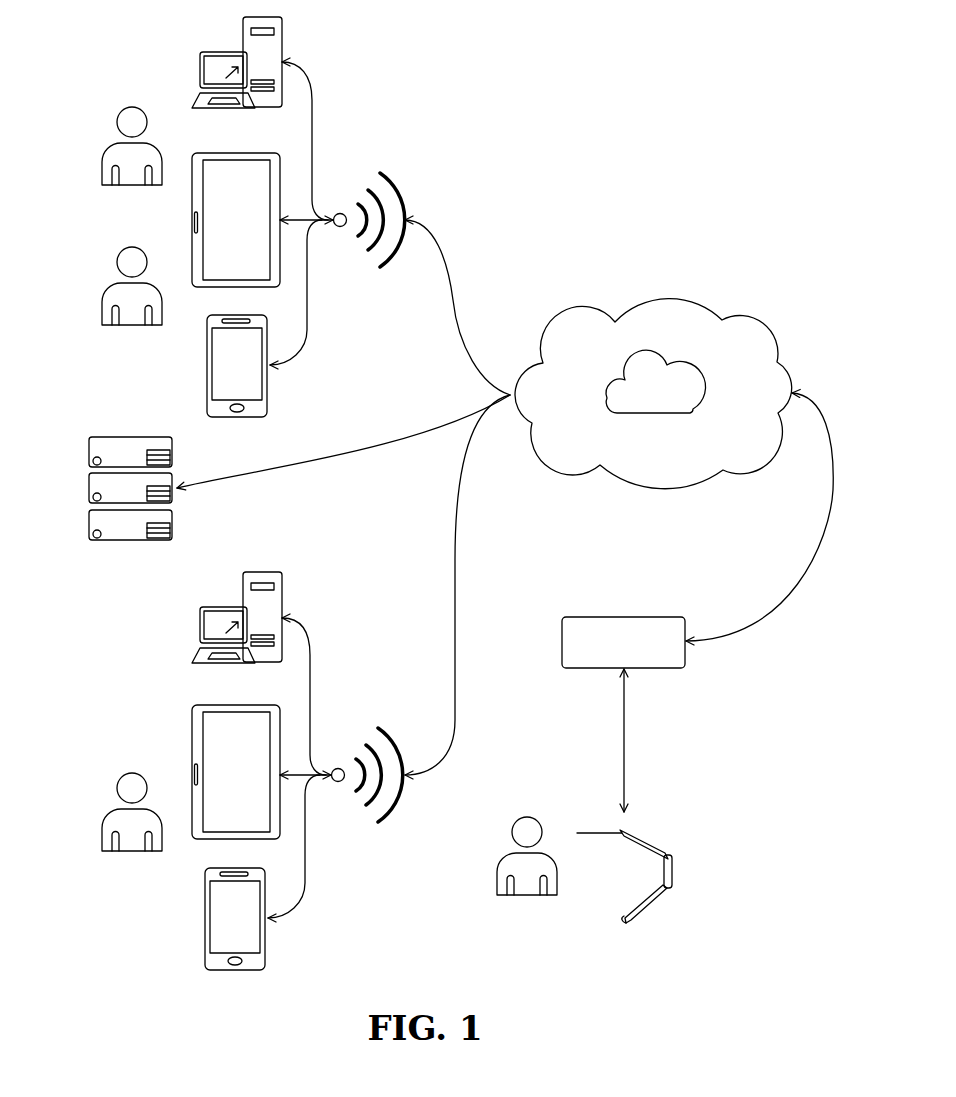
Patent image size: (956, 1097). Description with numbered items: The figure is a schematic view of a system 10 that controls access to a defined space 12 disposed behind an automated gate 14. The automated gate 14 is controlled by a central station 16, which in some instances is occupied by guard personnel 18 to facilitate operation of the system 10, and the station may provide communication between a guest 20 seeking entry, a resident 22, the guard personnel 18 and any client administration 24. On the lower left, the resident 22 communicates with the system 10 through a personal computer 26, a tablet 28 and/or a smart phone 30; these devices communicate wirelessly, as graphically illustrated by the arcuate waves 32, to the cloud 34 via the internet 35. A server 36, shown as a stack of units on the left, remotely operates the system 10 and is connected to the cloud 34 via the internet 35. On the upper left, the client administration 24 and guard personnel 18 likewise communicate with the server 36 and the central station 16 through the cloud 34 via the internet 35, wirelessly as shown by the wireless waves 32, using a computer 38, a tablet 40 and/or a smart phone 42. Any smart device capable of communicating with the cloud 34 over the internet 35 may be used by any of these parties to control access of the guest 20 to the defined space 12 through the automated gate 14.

The system 10 is at (572, 252).
The defined space 12 is at (624, 859).
The automated gate 14 is at (630, 922).
The central station 16 is at (640, 617).
The guard personnel 18 is at (103, 302).
The guest 20 is at (497, 874).
The resident 22 is at (103, 821).
The client administration 24 is at (103, 161).
The personal computer 26 is at (198, 631).
The tablet 28 is at (192, 746).
The smart phone 30 is at (205, 933).
The arcuate waves 32 is at (390, 185).
The cloud 34 is at (652, 350).
The internet 35 is at (505, 497).
The server 36 is at (89, 488).
The computer 38 is at (200, 70).
The tablet 40 is at (222, 153).
The smart phone 42 is at (207, 350).